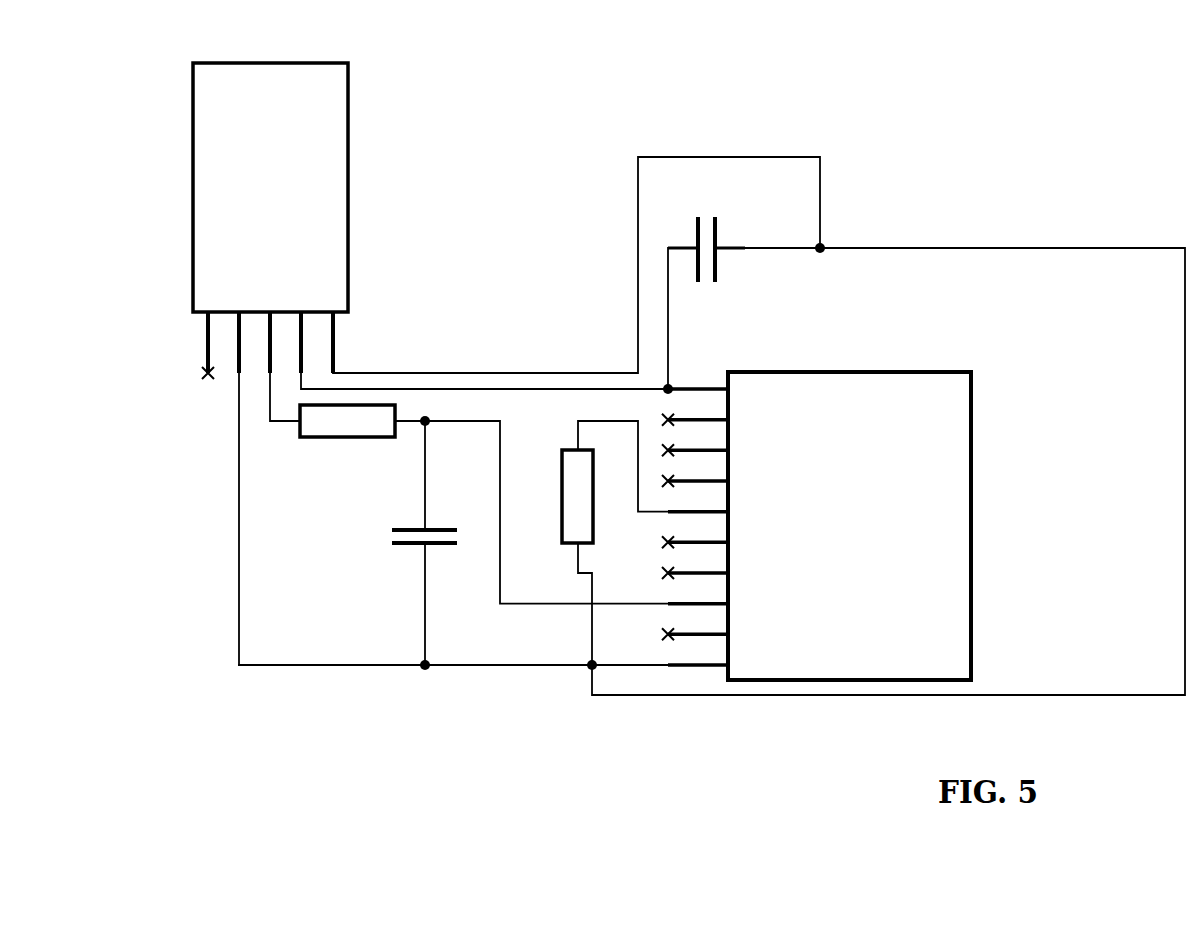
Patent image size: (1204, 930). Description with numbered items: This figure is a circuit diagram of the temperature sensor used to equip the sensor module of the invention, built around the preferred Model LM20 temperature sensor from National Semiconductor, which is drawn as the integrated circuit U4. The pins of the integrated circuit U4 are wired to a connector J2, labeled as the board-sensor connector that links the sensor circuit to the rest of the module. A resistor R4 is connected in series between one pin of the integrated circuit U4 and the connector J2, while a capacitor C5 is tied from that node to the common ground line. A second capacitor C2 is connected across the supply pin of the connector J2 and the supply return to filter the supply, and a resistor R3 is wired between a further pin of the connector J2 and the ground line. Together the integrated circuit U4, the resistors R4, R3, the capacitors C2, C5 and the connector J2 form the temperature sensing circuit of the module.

The LM20 temperature sensor U4 is at (266, 195).
The capacitor C2 0.1uF C2 is at (735, 225).
The TWINES board-sensor connector J2 is at (915, 490).
The resistor R4 470 ohm R4 is at (336, 434).
The capacitor C5 0.1uF C5 is at (399, 548).
The resistor R3 5.6K R3 is at (555, 545).